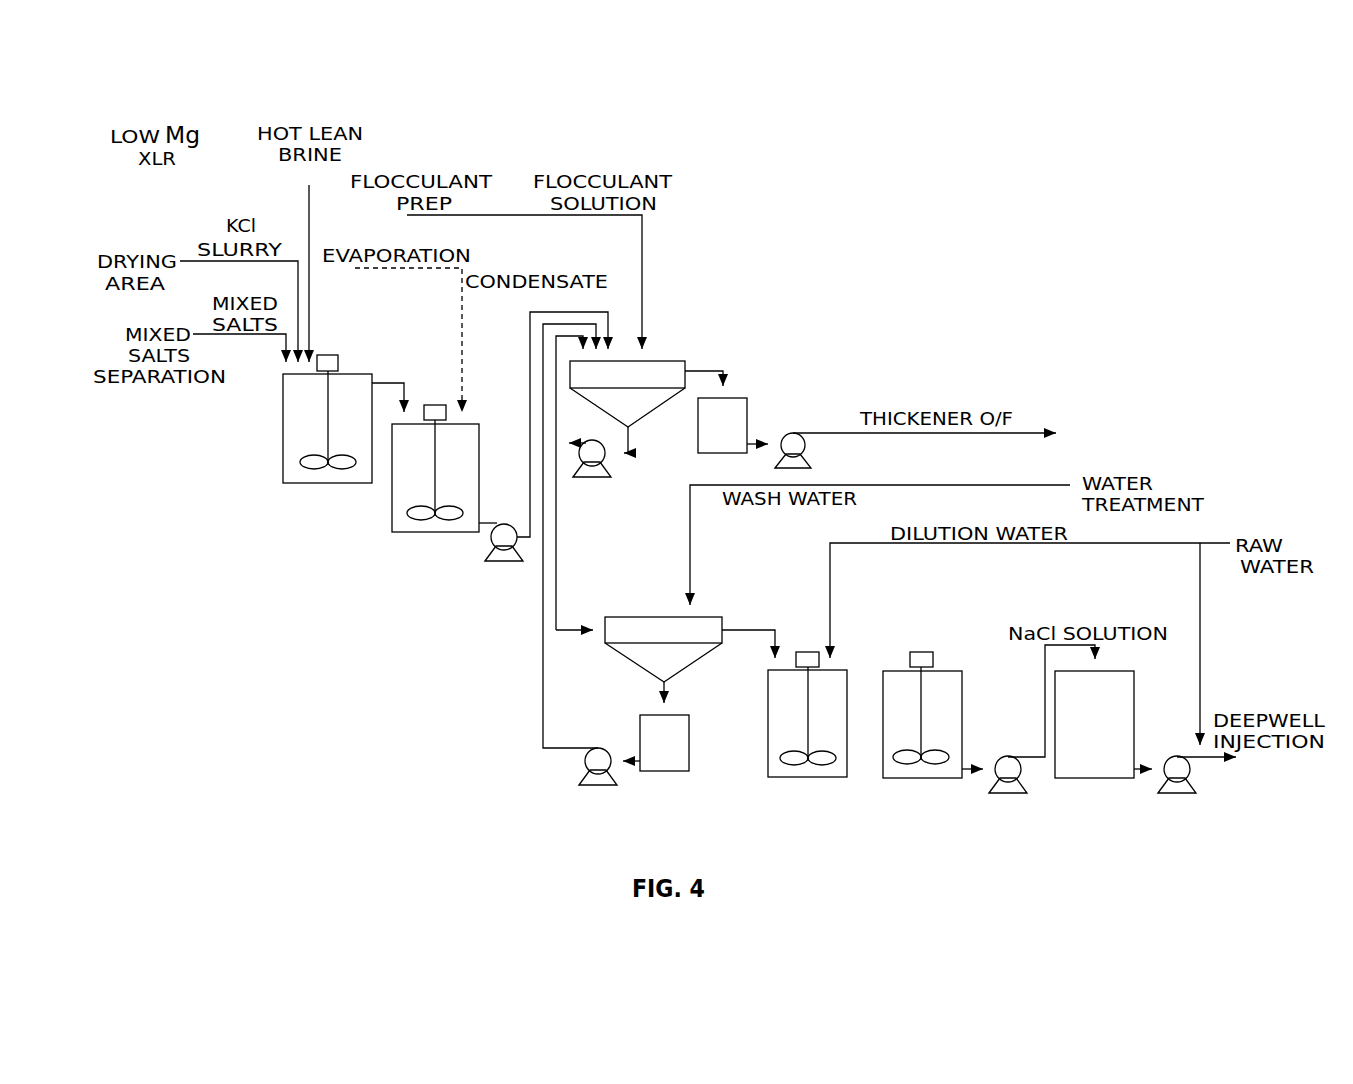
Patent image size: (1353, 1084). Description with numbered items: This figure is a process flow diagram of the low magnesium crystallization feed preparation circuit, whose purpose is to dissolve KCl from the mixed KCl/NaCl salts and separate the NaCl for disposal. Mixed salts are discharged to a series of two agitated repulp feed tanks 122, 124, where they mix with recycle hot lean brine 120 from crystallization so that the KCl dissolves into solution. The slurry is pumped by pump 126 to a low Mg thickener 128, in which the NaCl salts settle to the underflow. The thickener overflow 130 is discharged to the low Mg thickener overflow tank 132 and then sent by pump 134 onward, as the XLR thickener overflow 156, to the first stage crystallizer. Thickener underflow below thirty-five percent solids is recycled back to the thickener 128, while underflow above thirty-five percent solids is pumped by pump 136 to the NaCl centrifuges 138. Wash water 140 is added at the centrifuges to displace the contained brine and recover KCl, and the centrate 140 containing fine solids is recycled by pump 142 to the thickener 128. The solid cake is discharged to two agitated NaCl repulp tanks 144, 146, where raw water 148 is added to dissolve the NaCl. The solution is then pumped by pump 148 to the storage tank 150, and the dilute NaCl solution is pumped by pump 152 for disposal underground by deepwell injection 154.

The recycle hot lean brine 120 is at (308, 196).
The agitated repulp feed tank 122 is at (298, 445).
The agitated repulp feed tank 124 is at (404, 492).
The pump 126 is at (505, 533).
The low Mg thickener 128 is at (647, 412).
The thickener overflow 130 is at (702, 371).
The low Mg thickener overflow tank 132 is at (742, 435).
The pump 134 is at (800, 445).
The pump 136 is at (592, 453).
The NaCl centrifuges 138 is at (684, 640).
The wash water / centrate 140 is at (684, 757).
The pump 142 is at (598, 757).
The agitated NaCl repulp tank 144 is at (785, 725).
The agitated NaCl repulp tank 146 is at (885, 753).
The raw water / pump 148 is at (1003, 765).
The storage tank 150 is at (1115, 735).
The pump 152 is at (1173, 763).
The deepwell injection 154 is at (1225, 758).
The XLR thickener overflow 156 is at (1128, 415).